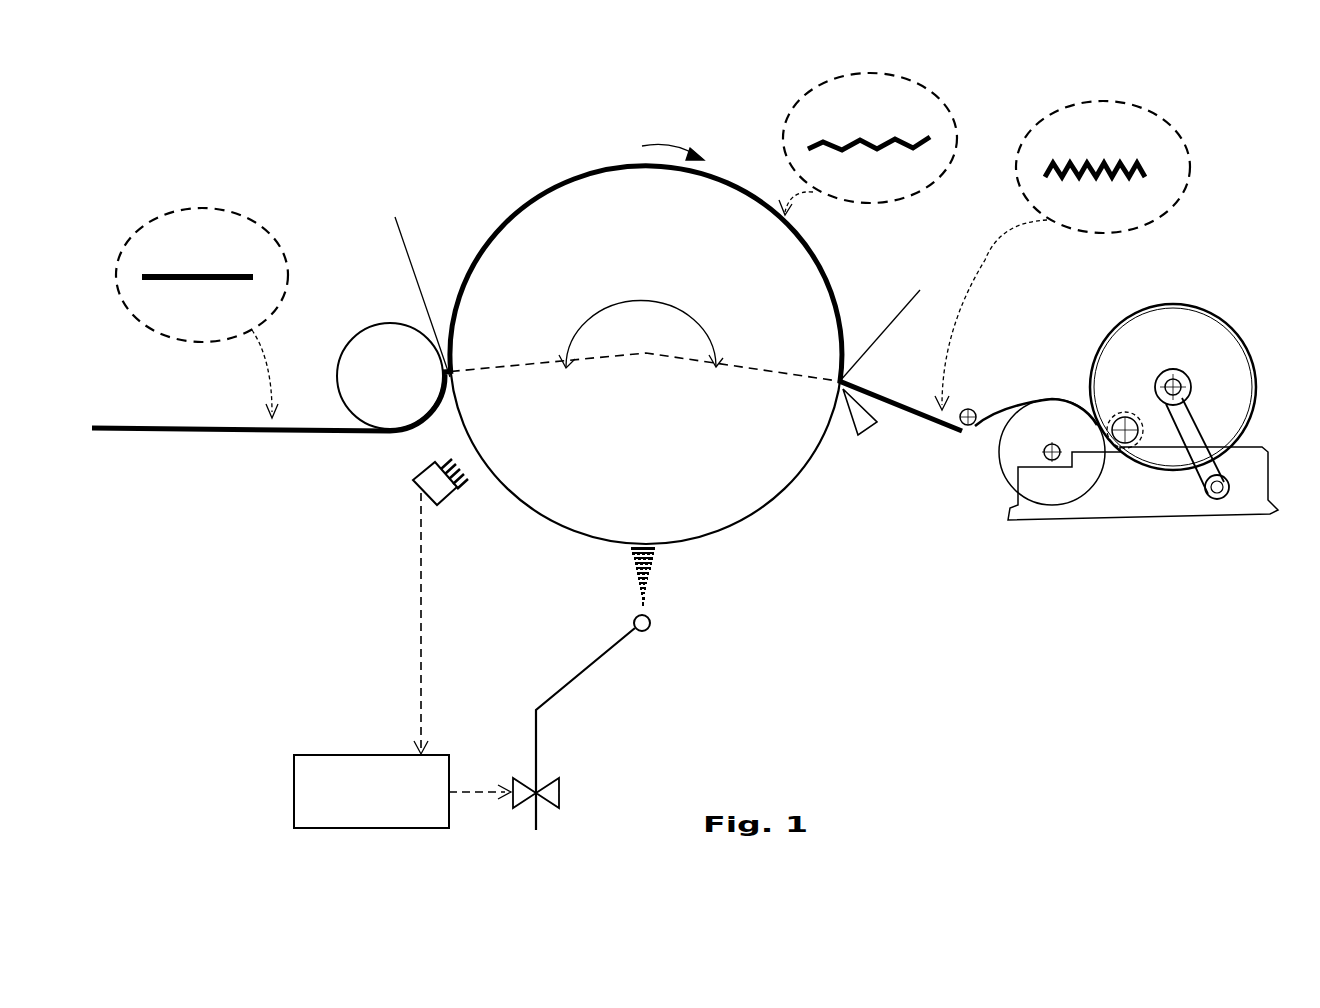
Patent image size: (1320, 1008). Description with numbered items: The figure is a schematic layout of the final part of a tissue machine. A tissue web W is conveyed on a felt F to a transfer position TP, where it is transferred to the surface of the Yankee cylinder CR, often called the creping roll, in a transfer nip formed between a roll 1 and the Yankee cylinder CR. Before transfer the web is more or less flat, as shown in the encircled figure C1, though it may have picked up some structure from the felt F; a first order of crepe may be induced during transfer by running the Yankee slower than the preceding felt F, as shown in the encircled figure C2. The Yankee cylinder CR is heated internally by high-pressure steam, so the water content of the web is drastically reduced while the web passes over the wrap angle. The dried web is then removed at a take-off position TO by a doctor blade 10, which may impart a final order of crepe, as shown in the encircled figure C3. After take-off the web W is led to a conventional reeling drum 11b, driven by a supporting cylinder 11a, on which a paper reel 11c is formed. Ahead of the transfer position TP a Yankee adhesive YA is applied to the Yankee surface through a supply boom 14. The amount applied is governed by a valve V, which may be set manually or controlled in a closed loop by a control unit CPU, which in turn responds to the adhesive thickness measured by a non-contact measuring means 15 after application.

The roll 1 is at (398, 389).
The doctor blade 10 is at (877, 422).
The supporting cylinder 11a is at (1020, 448).
The reeling drum 11b is at (1193, 367).
The paper reel 11c is at (1290, 396).
The supply boom 14 is at (618, 643).
The non-contact measuring means 15 is at (418, 487).
The tissue web W is at (200, 424).
The felt F is at (408, 254).
The transfer position TP is at (452, 371).
The take-off position TO is at (904, 315).
The rotation direction R is at (673, 141).
The Yankee cylinder CR is at (455, 420).
The encircled figure of flat web C1 is at (202, 313).
The encircled figure of first-order crepe C2 is at (868, 144).
The encircled figure of final-order crepe C3 is at (1062, 255).
The control unit CPU is at (402, 660).
The valve V is at (550, 778).
The Yankee adhesive YA is at (535, 842).